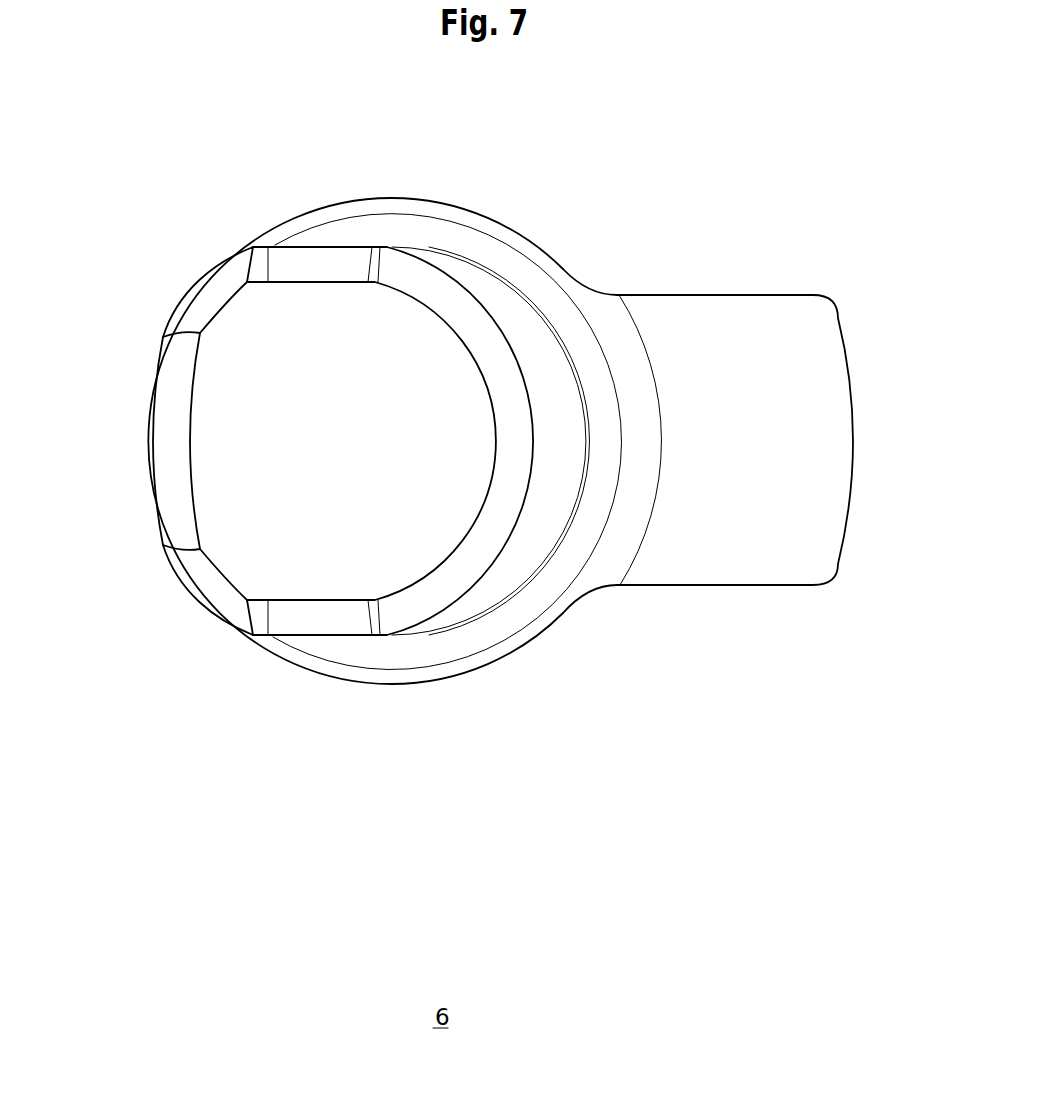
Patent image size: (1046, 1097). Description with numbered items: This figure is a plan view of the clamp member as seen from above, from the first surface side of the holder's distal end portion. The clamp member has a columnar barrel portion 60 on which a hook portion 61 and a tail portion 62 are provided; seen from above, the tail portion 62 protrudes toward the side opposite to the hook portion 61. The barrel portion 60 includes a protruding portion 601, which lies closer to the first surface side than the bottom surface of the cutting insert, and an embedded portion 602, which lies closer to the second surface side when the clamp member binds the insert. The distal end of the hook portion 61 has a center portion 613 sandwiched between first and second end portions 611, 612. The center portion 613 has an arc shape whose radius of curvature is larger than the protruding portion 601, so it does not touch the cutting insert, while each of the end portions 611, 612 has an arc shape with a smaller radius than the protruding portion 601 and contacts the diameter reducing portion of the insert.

The barrel portion 60 is at (388, 684).
The protruding portion 601 is at (451, 630).
The embedded portion 602 is at (505, 658).
The hook portion 61 is at (290, 442).
The first end portion 611 is at (198, 275).
The second end portion 612 is at (197, 605).
The center portion 613 is at (158, 508).
The tail portion 62 is at (854, 416).